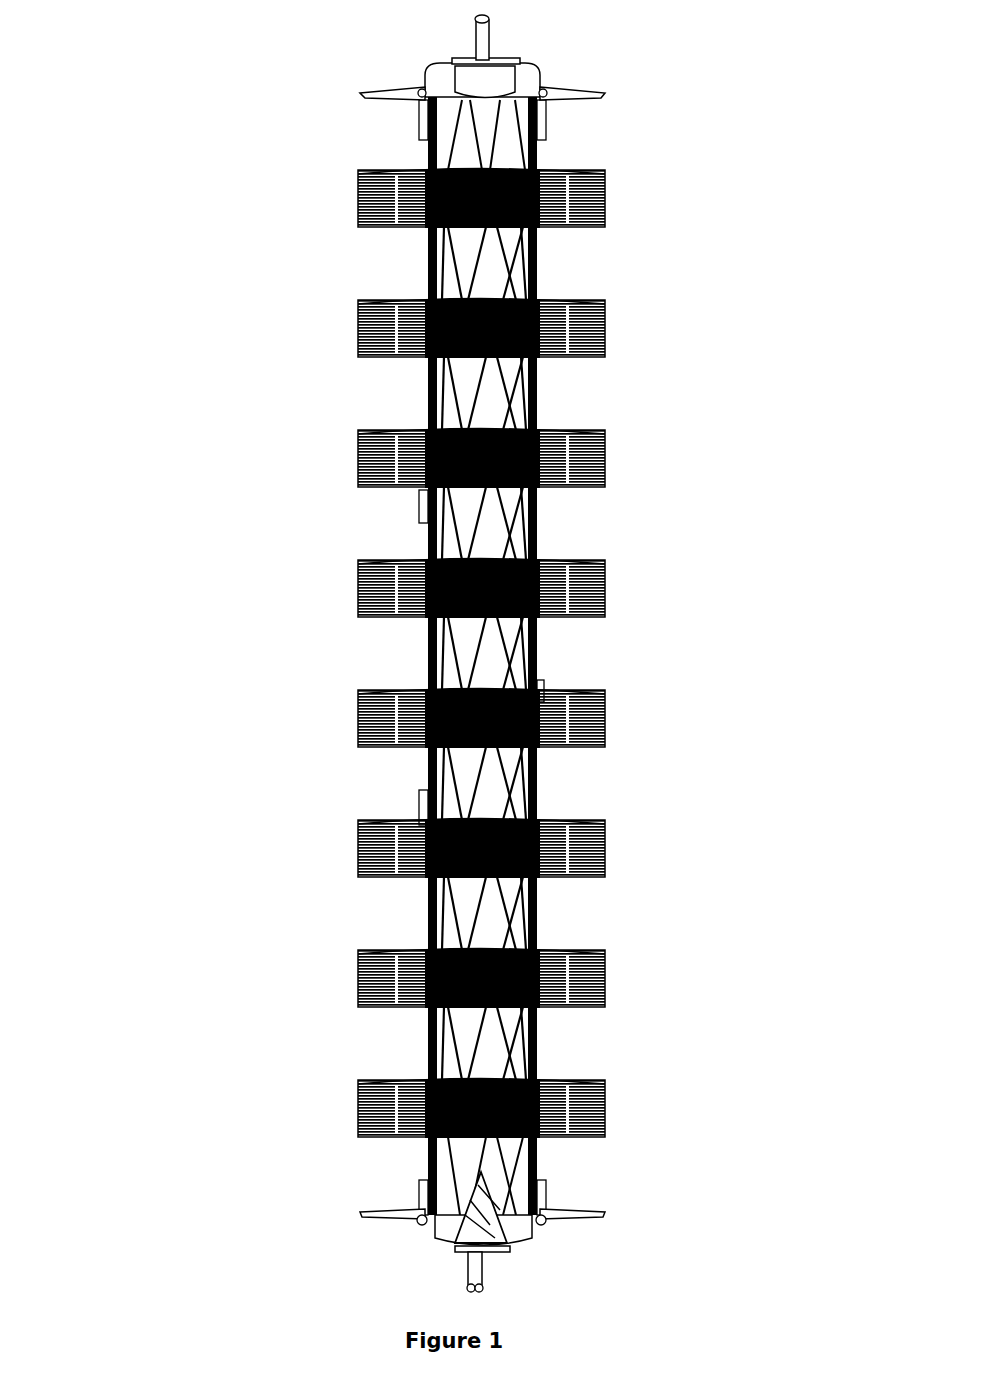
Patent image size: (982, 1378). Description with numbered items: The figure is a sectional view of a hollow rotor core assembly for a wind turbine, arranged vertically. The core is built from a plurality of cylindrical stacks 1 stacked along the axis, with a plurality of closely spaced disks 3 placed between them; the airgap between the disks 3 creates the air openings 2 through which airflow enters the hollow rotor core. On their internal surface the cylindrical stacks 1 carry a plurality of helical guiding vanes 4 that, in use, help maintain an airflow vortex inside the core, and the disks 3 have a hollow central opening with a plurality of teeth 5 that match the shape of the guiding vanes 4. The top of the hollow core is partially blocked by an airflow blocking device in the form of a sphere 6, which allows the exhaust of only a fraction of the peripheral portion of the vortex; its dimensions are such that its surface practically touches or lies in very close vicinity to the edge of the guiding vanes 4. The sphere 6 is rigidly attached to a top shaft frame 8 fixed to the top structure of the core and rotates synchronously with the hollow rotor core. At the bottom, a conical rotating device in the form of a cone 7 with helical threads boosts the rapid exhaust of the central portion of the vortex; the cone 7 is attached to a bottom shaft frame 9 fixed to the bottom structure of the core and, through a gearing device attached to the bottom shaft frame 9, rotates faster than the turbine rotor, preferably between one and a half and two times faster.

The cylindrical stacks 1 is at (430, 665).
The air openings 2 is at (358, 950).
The disks 3 is at (598, 434).
The helical guiding vanes 4 is at (482, 777).
The teeth 5 is at (540, 168).
The sphere 6 is at (372, 95).
The cone 7 is at (582, 1205).
The top shaft frame 8 is at (478, 28).
The bottom shaft frame 9 is at (478, 1278).